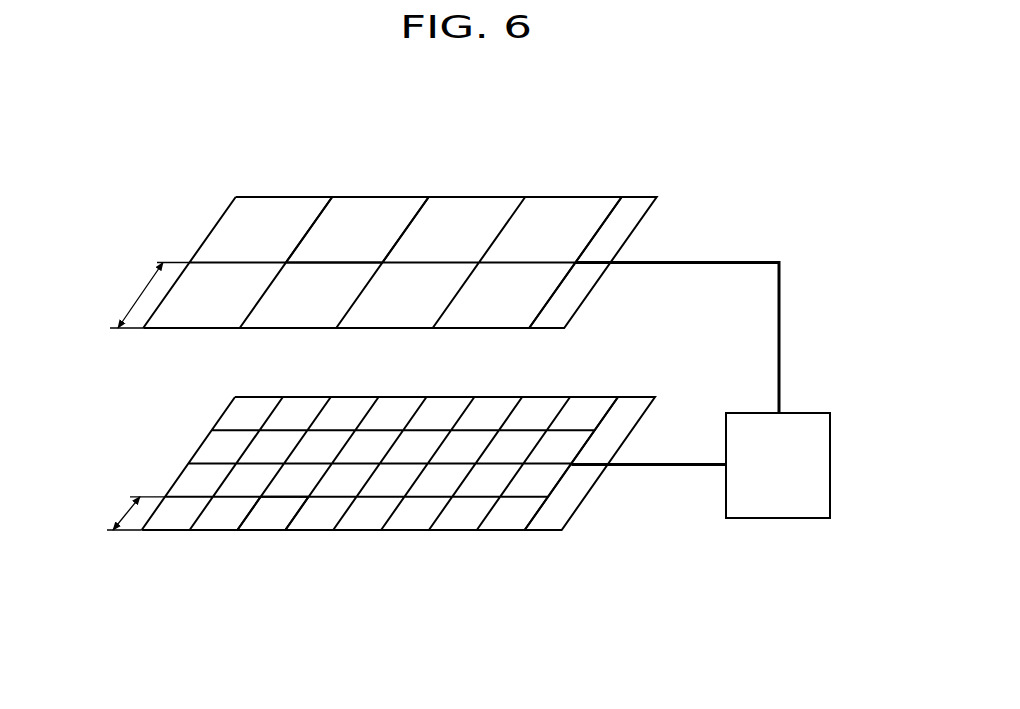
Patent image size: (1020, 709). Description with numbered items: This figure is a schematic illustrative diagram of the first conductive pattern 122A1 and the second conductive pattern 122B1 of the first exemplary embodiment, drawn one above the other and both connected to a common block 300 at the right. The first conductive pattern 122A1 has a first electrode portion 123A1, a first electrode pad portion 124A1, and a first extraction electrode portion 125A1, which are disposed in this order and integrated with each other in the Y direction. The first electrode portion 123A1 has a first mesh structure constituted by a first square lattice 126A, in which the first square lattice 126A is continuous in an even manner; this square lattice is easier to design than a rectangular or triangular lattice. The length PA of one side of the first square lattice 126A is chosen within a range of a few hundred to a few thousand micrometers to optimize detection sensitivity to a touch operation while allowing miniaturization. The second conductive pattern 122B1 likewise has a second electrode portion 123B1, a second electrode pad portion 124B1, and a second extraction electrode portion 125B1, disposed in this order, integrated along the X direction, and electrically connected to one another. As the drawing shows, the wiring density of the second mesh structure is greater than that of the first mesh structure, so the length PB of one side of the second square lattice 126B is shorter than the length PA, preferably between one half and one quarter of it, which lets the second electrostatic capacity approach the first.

The first conductive pattern 122A1 is at (461, 256).
The first electrode portion 123A1 is at (552, 200).
The first electrode pad portion 124A1 is at (635, 202).
The first extraction electrode portion 125A1 is at (678, 277).
The first square lattice 126A is at (375, 208).
The length of one side of first square lattice PA is at (148, 296).
The second conductive pattern 122B1 is at (434, 518).
The second electrode portion 123B1 is at (465, 522).
The second electrode pad portion 124B1 is at (548, 522).
The second extraction electrode portion 125B1 is at (648, 531).
The second square lattice 126B is at (270, 513).
The length of one side of second square lattice PB is at (128, 511).
The controller 300 is at (778, 512).